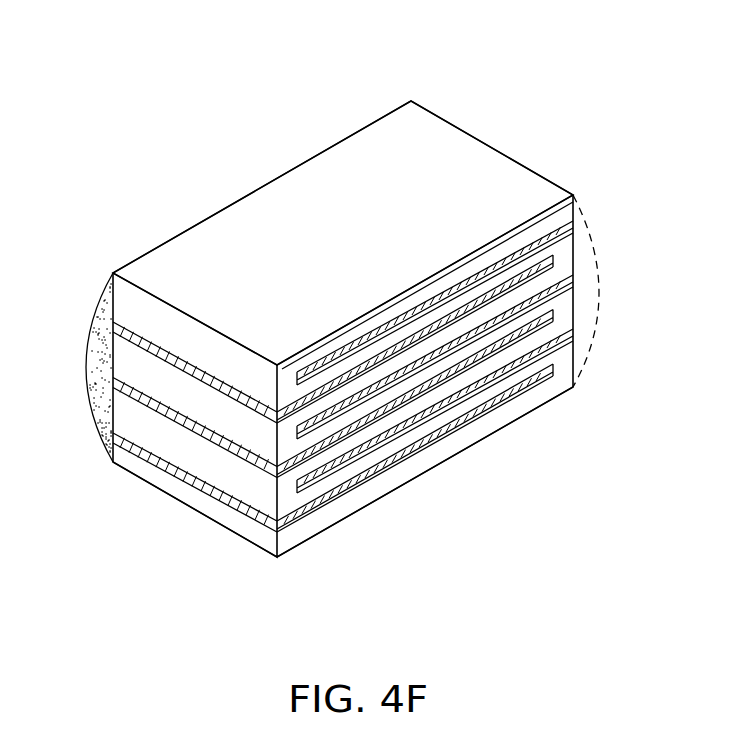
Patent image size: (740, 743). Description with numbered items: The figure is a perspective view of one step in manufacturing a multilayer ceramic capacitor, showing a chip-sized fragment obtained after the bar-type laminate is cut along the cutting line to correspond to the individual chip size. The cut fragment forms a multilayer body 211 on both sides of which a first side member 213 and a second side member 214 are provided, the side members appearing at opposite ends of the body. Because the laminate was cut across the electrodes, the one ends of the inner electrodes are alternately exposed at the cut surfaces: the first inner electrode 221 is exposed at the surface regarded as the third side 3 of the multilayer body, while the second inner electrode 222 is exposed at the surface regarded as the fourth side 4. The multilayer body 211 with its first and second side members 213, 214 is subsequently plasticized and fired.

The fourth side 4 is at (554, 142).
The third side 3 is at (133, 516).
The multilayer body 211 is at (458, 150).
The first side member 213 is at (88, 348).
The second side member 214 is at (590, 315).
The first inner electrode 221 is at (198, 490).
The second inner electrode 222 is at (347, 462).